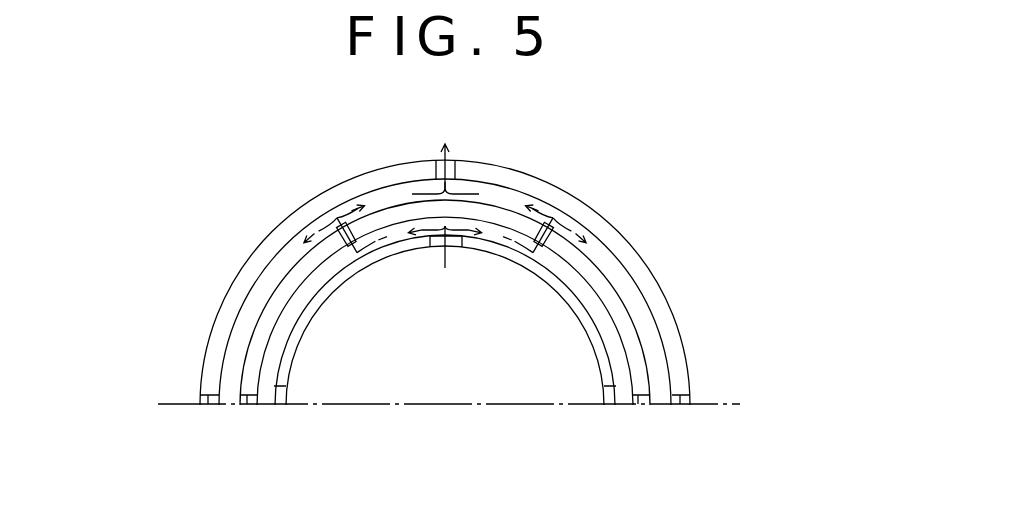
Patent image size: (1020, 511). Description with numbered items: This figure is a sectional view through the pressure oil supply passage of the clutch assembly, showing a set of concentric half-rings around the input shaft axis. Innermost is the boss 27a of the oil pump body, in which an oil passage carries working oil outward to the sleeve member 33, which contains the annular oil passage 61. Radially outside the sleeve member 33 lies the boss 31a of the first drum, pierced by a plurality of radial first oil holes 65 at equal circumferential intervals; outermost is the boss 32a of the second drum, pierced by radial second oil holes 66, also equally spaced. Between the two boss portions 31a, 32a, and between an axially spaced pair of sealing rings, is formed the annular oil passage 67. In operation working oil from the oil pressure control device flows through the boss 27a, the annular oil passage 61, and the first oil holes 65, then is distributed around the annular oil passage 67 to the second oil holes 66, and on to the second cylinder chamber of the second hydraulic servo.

The boss of the oil pump body 27a is at (579, 313).
The boss of the first drum 31a is at (265, 317).
The boss of the second drum 32a is at (668, 322).
The sleeve member 33 is at (258, 360).
The annular oil passage 61 is at (622, 380).
The first oil holes 65 is at (302, 252).
The second oil holes 66 is at (455, 173).
The annular oil passage 67 is at (386, 197).